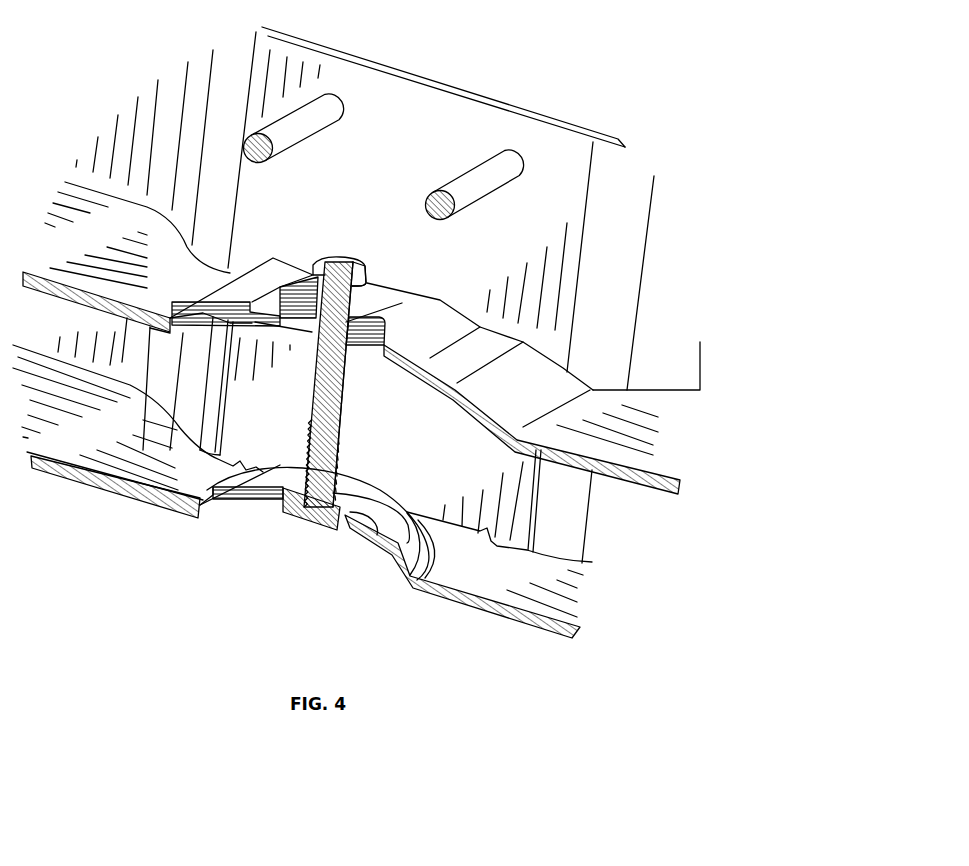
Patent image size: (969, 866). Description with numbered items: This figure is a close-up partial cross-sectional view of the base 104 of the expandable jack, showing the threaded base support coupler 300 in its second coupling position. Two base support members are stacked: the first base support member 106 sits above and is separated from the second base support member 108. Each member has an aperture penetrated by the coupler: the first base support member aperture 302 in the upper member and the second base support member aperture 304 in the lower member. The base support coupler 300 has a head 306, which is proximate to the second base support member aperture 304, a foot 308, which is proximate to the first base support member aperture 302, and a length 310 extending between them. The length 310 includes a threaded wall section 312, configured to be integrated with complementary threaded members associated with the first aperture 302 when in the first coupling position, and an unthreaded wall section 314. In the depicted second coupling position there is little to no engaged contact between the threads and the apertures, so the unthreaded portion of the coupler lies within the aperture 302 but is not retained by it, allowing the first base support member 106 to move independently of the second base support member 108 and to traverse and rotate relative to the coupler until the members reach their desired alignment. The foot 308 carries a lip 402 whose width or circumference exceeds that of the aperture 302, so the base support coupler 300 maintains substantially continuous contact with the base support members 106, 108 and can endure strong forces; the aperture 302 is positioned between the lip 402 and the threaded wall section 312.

The base 104 is at (670, 149).
The first base support member 106 is at (653, 445).
The second base support member 108 is at (590, 605).
The base support coupler 300 is at (309, 415).
The first base support member aperture 302 is at (350, 323).
The second base support member aperture 304 is at (283, 497).
The head 306 is at (303, 520).
The foot 308 is at (330, 258).
The length 310 is at (307, 410).
The threaded wall section 312 is at (339, 462).
The unthreaded wall section 314 is at (343, 380).
The lip 402 is at (358, 272).